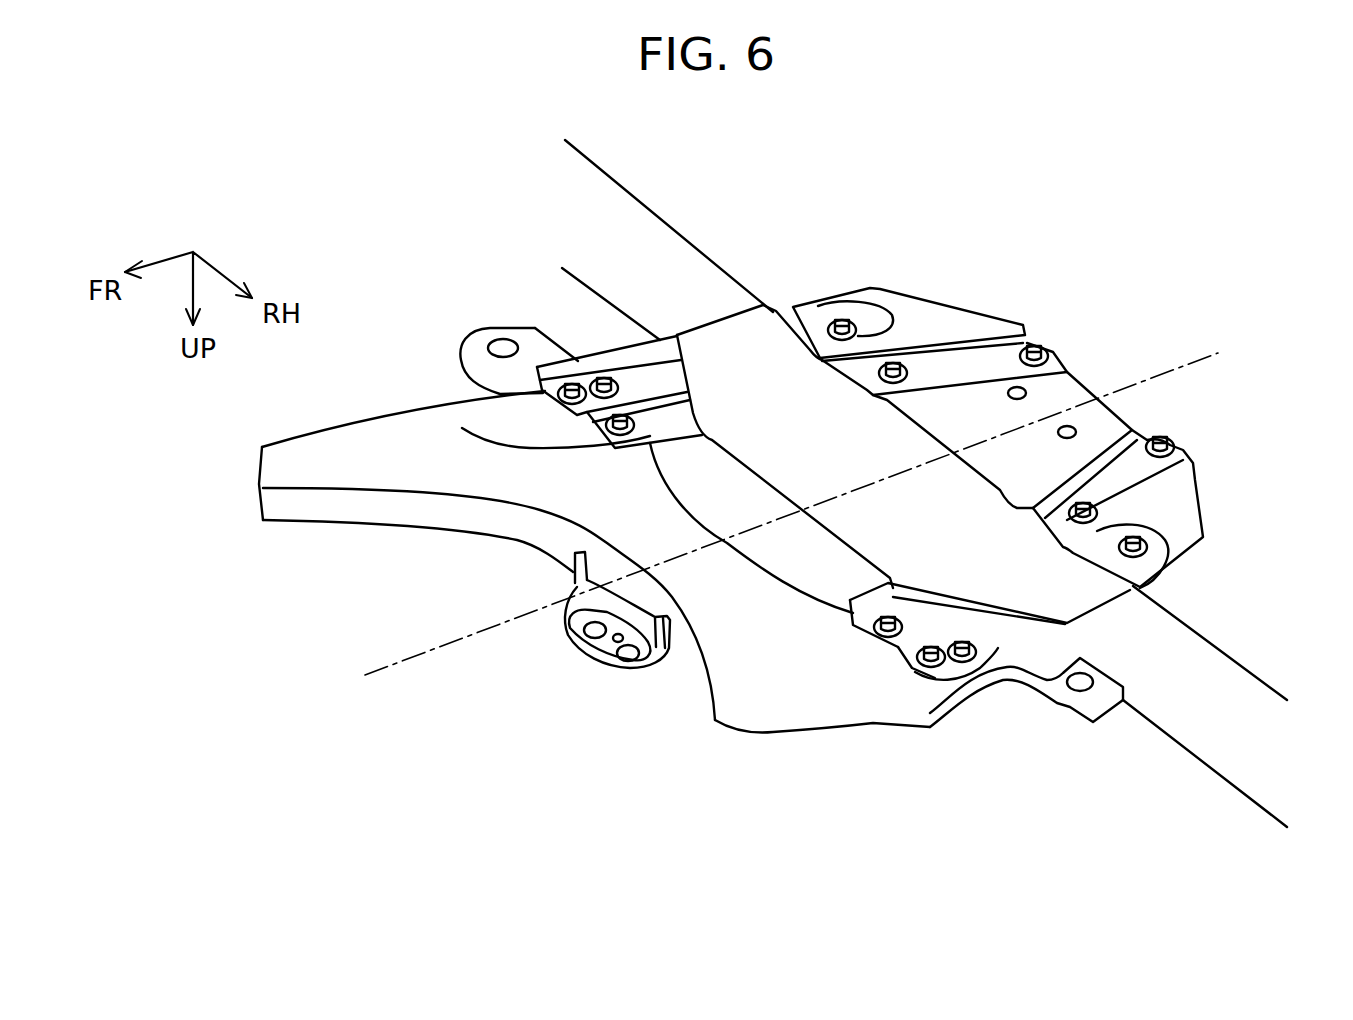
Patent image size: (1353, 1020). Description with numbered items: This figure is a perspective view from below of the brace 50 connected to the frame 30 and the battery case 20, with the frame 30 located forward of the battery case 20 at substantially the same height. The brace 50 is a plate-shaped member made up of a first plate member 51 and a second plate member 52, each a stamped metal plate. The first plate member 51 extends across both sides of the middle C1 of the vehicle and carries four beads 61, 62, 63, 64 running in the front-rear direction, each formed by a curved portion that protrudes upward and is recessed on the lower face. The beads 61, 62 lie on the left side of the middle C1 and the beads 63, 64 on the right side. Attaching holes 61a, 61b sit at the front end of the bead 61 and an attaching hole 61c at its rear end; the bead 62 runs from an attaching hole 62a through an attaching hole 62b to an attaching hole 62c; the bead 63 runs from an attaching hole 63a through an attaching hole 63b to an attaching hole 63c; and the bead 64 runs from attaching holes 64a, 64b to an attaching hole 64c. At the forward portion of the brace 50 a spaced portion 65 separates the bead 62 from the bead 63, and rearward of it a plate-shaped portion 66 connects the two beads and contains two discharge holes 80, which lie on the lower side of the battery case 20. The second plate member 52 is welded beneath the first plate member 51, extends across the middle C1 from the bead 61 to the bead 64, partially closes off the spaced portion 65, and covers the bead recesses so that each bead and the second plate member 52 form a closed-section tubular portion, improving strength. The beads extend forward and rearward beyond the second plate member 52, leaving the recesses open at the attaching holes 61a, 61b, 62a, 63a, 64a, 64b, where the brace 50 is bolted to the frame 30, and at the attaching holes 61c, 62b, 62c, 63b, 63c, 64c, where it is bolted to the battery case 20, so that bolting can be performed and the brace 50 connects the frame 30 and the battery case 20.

The battery case 20 is at (1247, 613).
The frame 30 is at (672, 686).
The brace 50 is at (855, 192).
The first plate member 51 is at (897, 307).
The second plate member 52 is at (742, 350).
The bead 61 is at (550, 318).
The attaching hole 61a is at (573, 384).
The attaching hole 61b is at (603, 379).
The attaching hole 61c is at (897, 333).
The bead 62 is at (722, 316).
The attaching hole 62a is at (462, 428).
The attaching hole 62b is at (908, 373).
The attaching hole 62c is at (1038, 349).
The bead 63 is at (1063, 612).
The attaching hole 63a is at (877, 633).
The attaching hole 63b is at (1090, 506).
The attaching hole 63c is at (1172, 442).
The bead 64 is at (1095, 679).
The attaching hole 64a is at (924, 662).
The attaching hole 64b is at (964, 664).
The attaching hole 64c is at (1145, 540).
The spaced portion 65 is at (700, 480).
The plate-shaped portion 66 is at (1097, 435).
The discharge holes 80 is at (1032, 393).
The middle C1 is at (1220, 348).